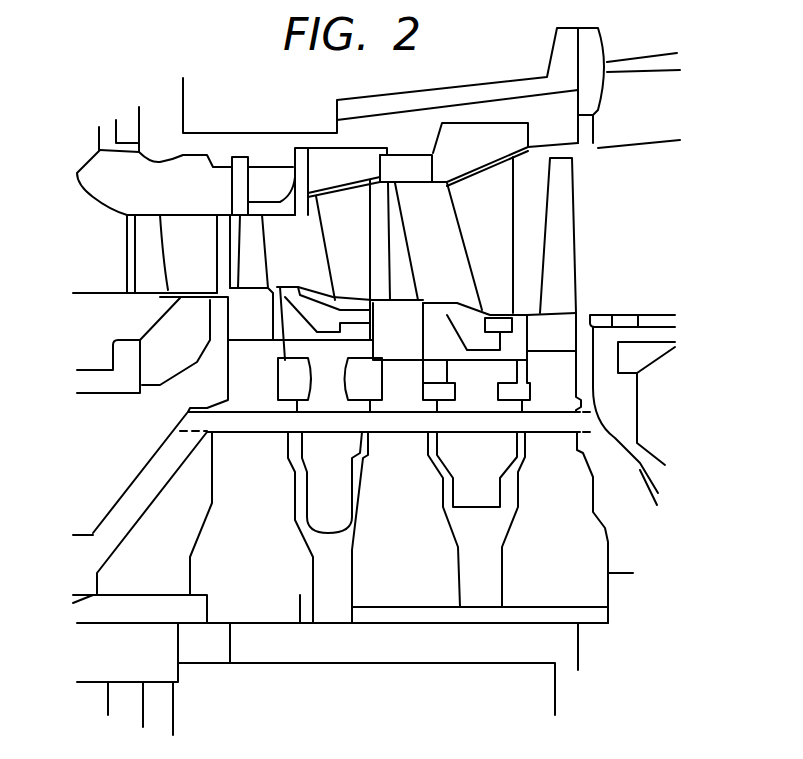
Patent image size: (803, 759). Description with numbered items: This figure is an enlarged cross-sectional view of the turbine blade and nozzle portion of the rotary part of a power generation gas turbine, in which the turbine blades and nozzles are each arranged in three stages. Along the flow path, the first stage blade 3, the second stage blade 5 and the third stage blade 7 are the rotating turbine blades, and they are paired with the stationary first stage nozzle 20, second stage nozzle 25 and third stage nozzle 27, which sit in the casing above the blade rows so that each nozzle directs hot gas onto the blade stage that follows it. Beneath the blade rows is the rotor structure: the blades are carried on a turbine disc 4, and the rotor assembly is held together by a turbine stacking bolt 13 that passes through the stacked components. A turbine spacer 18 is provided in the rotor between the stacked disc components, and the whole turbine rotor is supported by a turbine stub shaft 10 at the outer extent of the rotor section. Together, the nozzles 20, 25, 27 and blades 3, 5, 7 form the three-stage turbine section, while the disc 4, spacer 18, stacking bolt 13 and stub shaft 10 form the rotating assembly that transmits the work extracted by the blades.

The first stage blade 3 is at (265, 253).
The turbine disc 4 is at (605, 528).
The second stage blade 5 is at (405, 248).
The third stage blade 7 is at (558, 245).
The turbine stub shaft 10 is at (135, 480).
The turbine stacking bolt 13 is at (407, 425).
The turbine spacer 18 is at (477, 503).
The first stage nozzle 20 is at (160, 257).
The second stage nozzle 25 is at (333, 187).
The third stage nozzle 27 is at (517, 198).